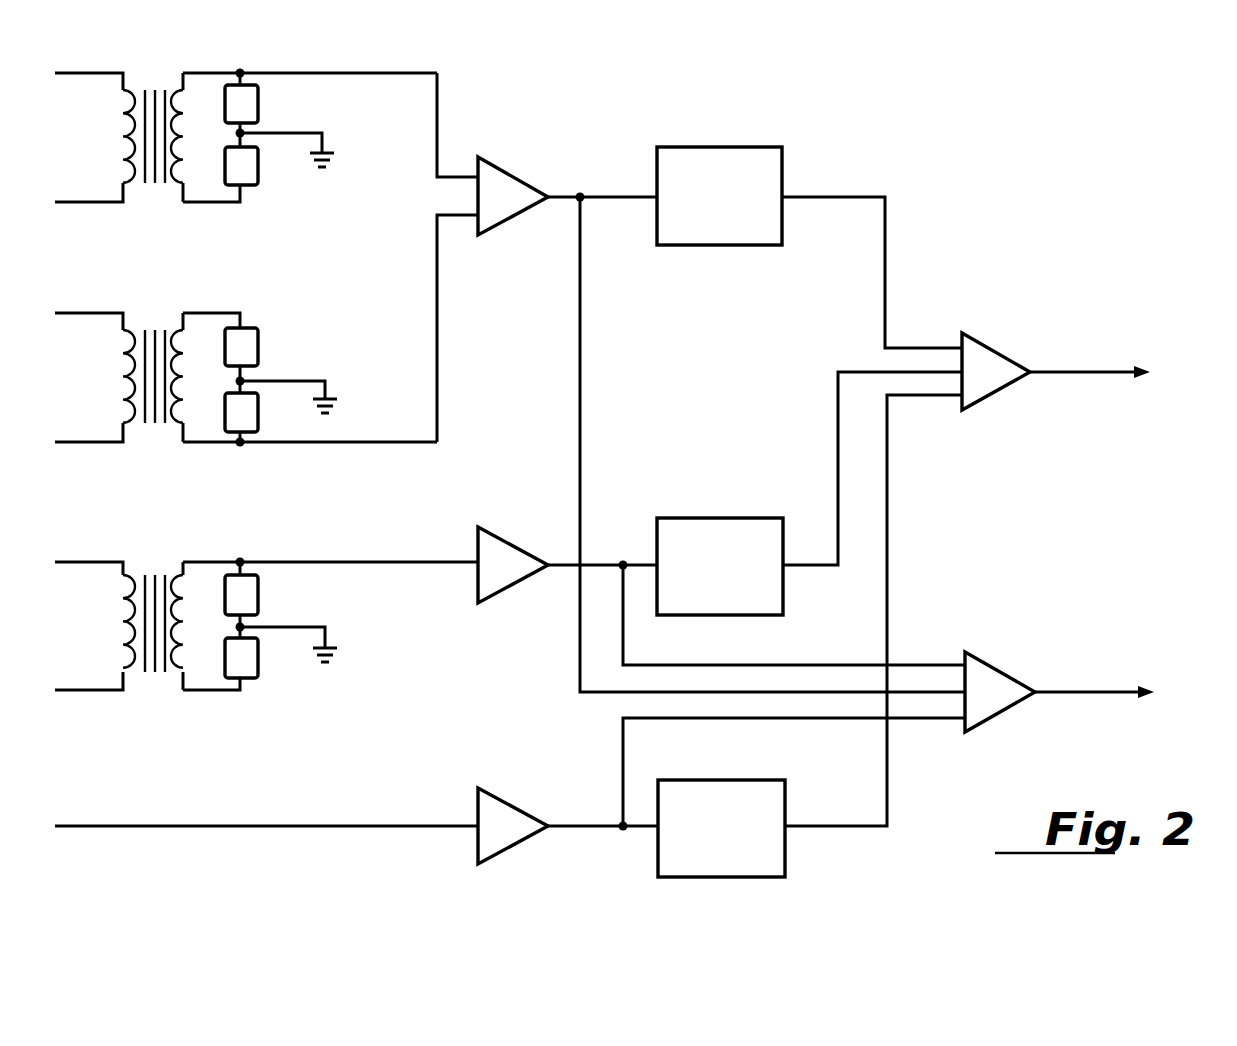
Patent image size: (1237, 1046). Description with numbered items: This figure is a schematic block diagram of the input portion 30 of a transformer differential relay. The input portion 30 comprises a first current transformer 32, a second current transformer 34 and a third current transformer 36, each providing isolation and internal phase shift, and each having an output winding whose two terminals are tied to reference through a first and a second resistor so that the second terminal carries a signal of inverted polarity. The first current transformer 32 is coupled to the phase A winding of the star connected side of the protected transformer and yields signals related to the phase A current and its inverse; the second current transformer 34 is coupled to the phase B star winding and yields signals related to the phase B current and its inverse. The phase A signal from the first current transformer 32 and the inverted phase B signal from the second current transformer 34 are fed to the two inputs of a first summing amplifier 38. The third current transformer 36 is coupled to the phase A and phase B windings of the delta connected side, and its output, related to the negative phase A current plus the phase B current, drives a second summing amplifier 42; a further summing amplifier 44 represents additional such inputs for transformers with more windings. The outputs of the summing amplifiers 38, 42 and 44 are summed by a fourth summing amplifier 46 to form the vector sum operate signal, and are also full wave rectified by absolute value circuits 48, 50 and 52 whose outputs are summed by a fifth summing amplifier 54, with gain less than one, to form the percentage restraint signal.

The input portion 30 is at (893, 152).
The first current transformer 32 is at (150, 80).
The second current transformer 34 is at (155, 320).
The third current transformer 36 is at (152, 565).
The first summing amplifier 38 is at (515, 190).
The second summing amplifier 42 is at (512, 553).
The summing amplifier 44 is at (515, 818).
The fourth summing amplifier 46 is at (980, 668).
The absolute value circuit 48 is at (730, 152).
The absolute value circuit 50 is at (745, 527).
The absolute value circuit 52 is at (772, 798).
The fifth summing amplifier 54 is at (978, 345).